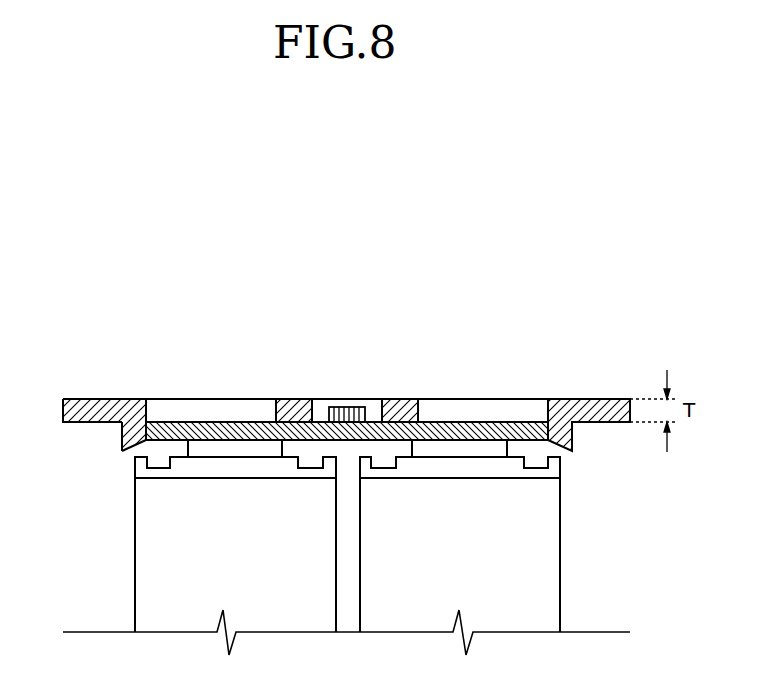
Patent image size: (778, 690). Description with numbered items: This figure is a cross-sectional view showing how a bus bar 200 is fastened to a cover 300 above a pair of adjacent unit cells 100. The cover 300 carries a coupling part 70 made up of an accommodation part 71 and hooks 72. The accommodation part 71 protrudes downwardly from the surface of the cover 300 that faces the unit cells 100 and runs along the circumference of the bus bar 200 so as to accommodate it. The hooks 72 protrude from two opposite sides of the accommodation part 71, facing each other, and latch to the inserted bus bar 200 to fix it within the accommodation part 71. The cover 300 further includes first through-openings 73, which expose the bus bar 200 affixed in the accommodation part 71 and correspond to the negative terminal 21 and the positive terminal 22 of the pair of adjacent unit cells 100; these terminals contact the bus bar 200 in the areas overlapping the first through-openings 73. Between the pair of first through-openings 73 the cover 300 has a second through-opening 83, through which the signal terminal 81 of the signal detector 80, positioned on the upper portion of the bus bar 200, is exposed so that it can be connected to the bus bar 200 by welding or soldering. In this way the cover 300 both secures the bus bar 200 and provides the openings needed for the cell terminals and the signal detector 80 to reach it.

The coupling part 70 is at (190, 382).
The accommodation part 71 is at (125, 433).
The hooks 72 is at (138, 445).
The first through-openings 73 is at (276, 410).
The signal detector 80 is at (349, 392).
The signal terminal 81 is at (357, 410).
The second through-opening 83 is at (323, 410).
The bus bar 200 is at (477, 428).
The cover 300 is at (583, 407).
The negative terminal 21 is at (214, 449).
The positive terminal 22 is at (480, 450).
The unit cells 100 is at (217, 567).